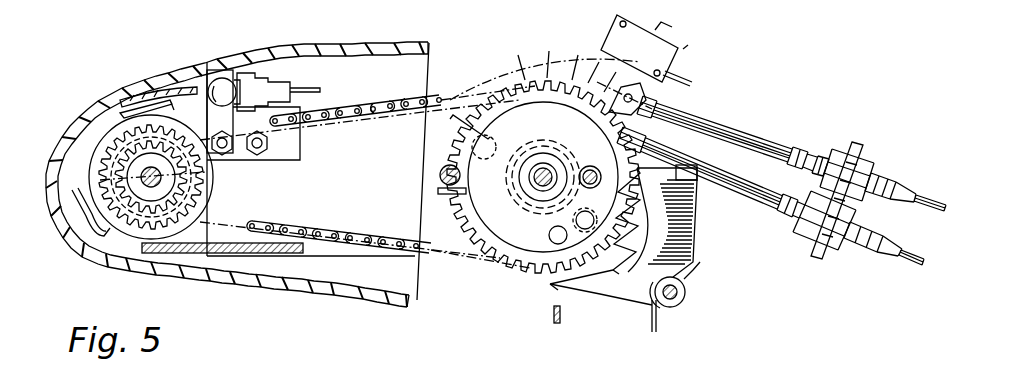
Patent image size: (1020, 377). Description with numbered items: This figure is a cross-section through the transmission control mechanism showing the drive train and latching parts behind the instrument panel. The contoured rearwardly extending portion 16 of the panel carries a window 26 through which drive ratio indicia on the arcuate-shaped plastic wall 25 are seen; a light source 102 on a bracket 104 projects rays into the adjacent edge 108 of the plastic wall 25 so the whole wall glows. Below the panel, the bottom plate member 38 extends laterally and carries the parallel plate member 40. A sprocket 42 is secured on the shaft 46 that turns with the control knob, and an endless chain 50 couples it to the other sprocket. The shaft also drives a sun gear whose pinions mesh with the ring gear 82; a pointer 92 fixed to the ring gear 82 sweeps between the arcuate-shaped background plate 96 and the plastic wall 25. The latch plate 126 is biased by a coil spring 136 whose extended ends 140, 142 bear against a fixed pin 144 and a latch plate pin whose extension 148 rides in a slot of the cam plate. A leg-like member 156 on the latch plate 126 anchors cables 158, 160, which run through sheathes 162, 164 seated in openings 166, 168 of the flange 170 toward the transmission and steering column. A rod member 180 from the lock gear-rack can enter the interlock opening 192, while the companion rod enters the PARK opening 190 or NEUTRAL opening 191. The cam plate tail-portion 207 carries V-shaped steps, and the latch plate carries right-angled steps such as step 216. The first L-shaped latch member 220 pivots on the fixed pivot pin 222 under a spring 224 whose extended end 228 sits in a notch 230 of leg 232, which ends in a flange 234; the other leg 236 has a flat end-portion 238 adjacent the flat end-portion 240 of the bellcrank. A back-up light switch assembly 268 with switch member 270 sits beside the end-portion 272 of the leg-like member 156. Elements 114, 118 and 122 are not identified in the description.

The contoured rearwardly extending portion 16 is at (136, 74).
The arcuate-shaped plastic wall 25 is at (68, 140).
The window 26 is at (118, 95).
The bottom plate member 38 is at (282, 253).
The plate member 40 is at (285, 173).
The sprocket 42 is at (174, 191).
The shaft 46 is at (180, 210).
The endless chain 50 is at (374, 246).
The ring gear 82 is at (122, 232).
The pointer 92 is at (118, 112).
The arcuate-shaped background plate 96 is at (84, 214).
The light source 102 is at (228, 82).
The bracket 104 is at (288, 149).
The adjacent edge 108 is at (216, 68).
The lever top 114 is at (688, 186).
The gear shaft 118 is at (520, 178).
The gear 122 is at (470, 214).
The latch plate 126 is at (472, 144).
The coil spring 136 is at (518, 199).
The extended end 140 is at (438, 191).
The extended end 142 is at (480, 123).
The fixed pin 144 is at (440, 168).
The pin extension 148 is at (531, 153).
The leg-like member 156 is at (604, 110).
The cable 158 is at (664, 101).
The cable 160 is at (655, 137).
The sheath 162 is at (752, 140).
The sheath 164 is at (752, 200).
The opening 166 is at (872, 160).
The opening 168 is at (836, 252).
The flange 170 is at (857, 142).
The rod member 180 is at (592, 165).
The PARK opening 190 is at (576, 220).
The NEUTRAL opening 191 is at (553, 239).
The interlock opening 192 is at (593, 207).
The tail-portion 207 is at (612, 272).
The right-angled step 216 is at (660, 326).
The first substantially L-shaped latch member 220 is at (722, 241).
The fixed pivot pin 222 is at (680, 298).
The spring 224 is at (687, 297).
The extended end 228 is at (690, 268).
The notch 230 is at (687, 280).
The leg 232 is at (692, 212).
The flange 234 is at (700, 172).
The leg 236 is at (636, 312).
The flat end-portion 238 is at (566, 297).
The flat end-portion 240 is at (554, 312).
The back-up light switch assembly 268 is at (726, 32).
The switch member 270 is at (610, 42).
The end-portion 272 is at (646, 50).